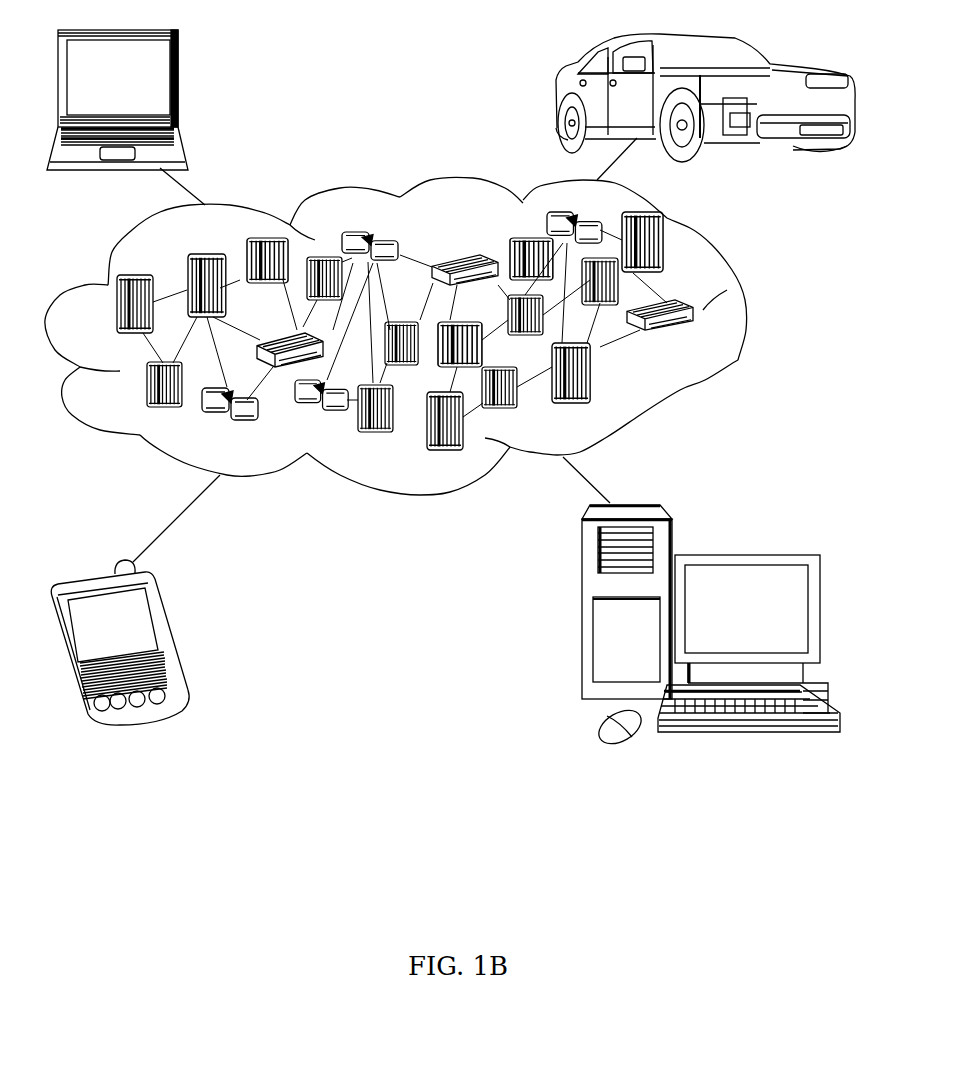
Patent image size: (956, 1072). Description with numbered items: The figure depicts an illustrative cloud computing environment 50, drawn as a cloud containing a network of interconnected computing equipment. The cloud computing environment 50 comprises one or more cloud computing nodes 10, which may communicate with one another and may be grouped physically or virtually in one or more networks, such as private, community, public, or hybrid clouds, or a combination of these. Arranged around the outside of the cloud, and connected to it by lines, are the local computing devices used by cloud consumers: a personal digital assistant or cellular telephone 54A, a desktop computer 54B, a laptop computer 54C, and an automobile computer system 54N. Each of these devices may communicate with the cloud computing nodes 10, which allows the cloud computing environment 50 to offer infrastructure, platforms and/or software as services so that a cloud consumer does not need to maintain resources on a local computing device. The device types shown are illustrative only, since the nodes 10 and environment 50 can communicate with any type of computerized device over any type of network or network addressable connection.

The cloud computing node 10 is at (692, 337).
The cloud computing environment 50 is at (748, 313).
The personal digital assistant or cellular telephone 54A is at (170, 638).
The desktop computer 54B is at (743, 555).
The laptop computer 54C is at (180, 83).
The automobile computer system 54N is at (555, 97).